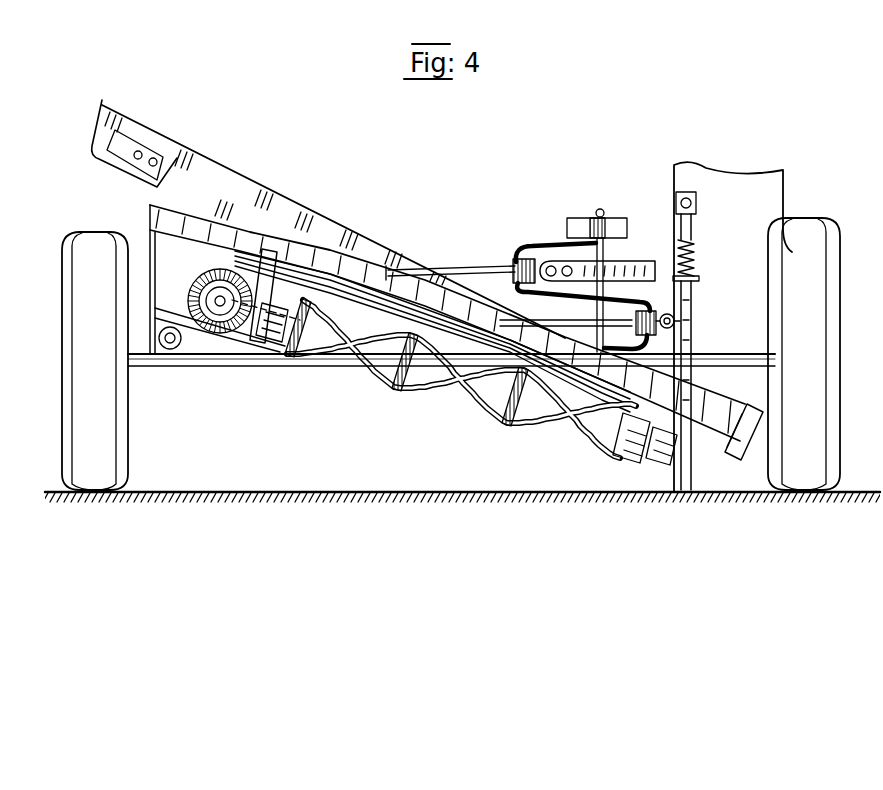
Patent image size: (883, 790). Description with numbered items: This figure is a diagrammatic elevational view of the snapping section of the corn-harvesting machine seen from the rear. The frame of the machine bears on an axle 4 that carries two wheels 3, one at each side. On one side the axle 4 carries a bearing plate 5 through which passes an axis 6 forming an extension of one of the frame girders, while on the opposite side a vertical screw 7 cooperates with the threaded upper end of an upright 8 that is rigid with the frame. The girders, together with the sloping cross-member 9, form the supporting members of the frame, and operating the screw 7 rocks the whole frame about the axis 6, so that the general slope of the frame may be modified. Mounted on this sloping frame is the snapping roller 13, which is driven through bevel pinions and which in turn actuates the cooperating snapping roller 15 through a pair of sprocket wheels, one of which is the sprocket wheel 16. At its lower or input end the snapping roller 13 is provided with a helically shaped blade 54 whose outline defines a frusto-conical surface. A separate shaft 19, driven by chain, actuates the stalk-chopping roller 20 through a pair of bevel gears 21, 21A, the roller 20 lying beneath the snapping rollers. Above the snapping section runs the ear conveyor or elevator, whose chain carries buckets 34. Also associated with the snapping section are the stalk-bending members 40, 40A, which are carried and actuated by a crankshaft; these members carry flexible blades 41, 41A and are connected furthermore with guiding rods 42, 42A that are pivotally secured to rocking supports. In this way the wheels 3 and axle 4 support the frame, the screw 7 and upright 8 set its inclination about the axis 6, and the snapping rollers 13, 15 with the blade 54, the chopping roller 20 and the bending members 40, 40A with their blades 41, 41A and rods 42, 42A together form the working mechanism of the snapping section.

The wheels 3 is at (78, 323).
The axle 4 is at (312, 368).
The bearing plate 5 is at (182, 352).
The axis 6 is at (168, 351).
The vertical screw 7 is at (698, 205).
The upright 8 is at (690, 294).
The sloping cross-member 9 is at (327, 266).
The snapping roller 13 is at (300, 252).
The cooperating snapping roller 15 is at (372, 268).
The sprocket wheel 16 is at (232, 262).
The shaft 19 is at (215, 302).
The stalk-chopping roller 20 is at (382, 378).
The bevel gear 21 is at (201, 278).
The bevel gear 21A is at (258, 347).
The buckets 34 is at (116, 143).
The stalk-bending member 40 is at (646, 311).
The stalk-bending member 40A is at (518, 262).
The flexible blade 41 is at (674, 322).
The flexible blade 41A is at (632, 266).
The guiding rod 42 is at (518, 318).
The guiding rod 42A is at (418, 265).
The helically shaped blade 54 is at (746, 394).